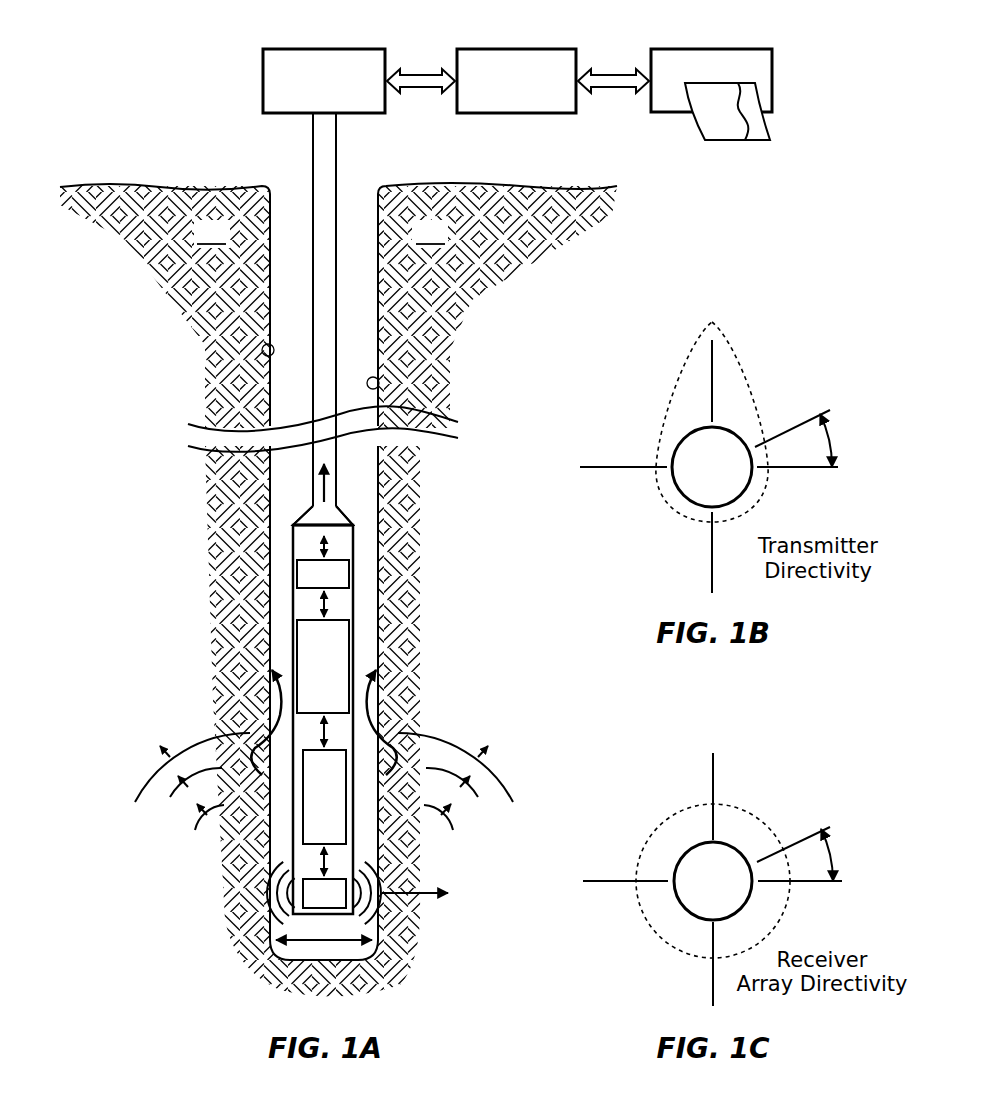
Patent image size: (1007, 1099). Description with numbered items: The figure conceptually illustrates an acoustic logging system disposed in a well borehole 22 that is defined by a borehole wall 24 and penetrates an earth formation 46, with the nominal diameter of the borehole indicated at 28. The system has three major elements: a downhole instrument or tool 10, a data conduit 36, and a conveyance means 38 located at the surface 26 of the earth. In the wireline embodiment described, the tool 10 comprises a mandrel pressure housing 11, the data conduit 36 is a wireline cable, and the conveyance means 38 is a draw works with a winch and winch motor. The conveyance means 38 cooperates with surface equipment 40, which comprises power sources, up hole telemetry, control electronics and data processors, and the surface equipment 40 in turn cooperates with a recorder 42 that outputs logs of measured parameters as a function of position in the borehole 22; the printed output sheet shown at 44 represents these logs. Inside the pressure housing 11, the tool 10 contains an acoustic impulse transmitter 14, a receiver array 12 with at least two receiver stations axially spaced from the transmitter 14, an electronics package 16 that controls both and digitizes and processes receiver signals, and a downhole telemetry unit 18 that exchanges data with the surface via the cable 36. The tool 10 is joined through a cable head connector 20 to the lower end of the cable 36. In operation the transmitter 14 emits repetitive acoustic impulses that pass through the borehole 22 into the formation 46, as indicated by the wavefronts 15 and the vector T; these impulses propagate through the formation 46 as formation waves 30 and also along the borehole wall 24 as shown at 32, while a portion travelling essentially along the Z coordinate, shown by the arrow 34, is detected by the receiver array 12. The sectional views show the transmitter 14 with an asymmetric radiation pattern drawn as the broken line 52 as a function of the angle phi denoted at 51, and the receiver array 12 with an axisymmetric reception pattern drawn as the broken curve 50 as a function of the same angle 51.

In FIG. 1A, the tool 10 is at (366, 628).
In FIG. 1A, the mandrel pressure housing 11 is at (352, 600).
In FIG. 1A, the receiver array 12 is at (297, 640).
In FIG. 1C, the receiver array 12 is at (673, 868).
In FIG. 1A, the acoustic impulse transmitter 14 is at (262, 866).
In FIG. 1B, the acoustic impulse transmitter 14 is at (675, 455).
In FIG. 1A, the wavefronts 15 is at (272, 893).
In FIG. 1A, the electronics package 16 is at (356, 840).
In FIG. 1A, the downhole telemetry unit 18 is at (297, 575).
In FIG. 1A, the cable head connector 20 is at (353, 516).
In FIG. 1A, the borehole 22 is at (352, 345).
In FIG. 1A, the borehole wall 24 is at (262, 350).
In FIG. 1A, the surface 26 is at (517, 185).
In FIG. 1A, the nominal diameter 28 is at (307, 944).
In FIG. 1A, the formation waves 30 is at (156, 778).
In FIG. 1A, the borehole wall waves 32 is at (278, 712).
In FIG. 1A, the arrow 34 is at (316, 487).
In FIG. 1A, the data conduit 36 is at (337, 154).
In FIG. 1A, the conveyance means 38 is at (337, 48).
In FIG. 1A, the surface equipment 40 is at (530, 48).
In FIG. 1A, the recorder 42 is at (728, 48).
In FIG. 1A, the recorder output 44 is at (772, 136).
In FIG. 1A, the earth formation 46 is at (338, 591).
In FIG. 1C, the broken curve 50 is at (745, 814).
In FIG. 1B, the angle phi 51 is at (836, 462).
In FIG. 1C, the angle phi 51 is at (836, 876).
In FIG. 1B, the broken line 52 is at (758, 402).